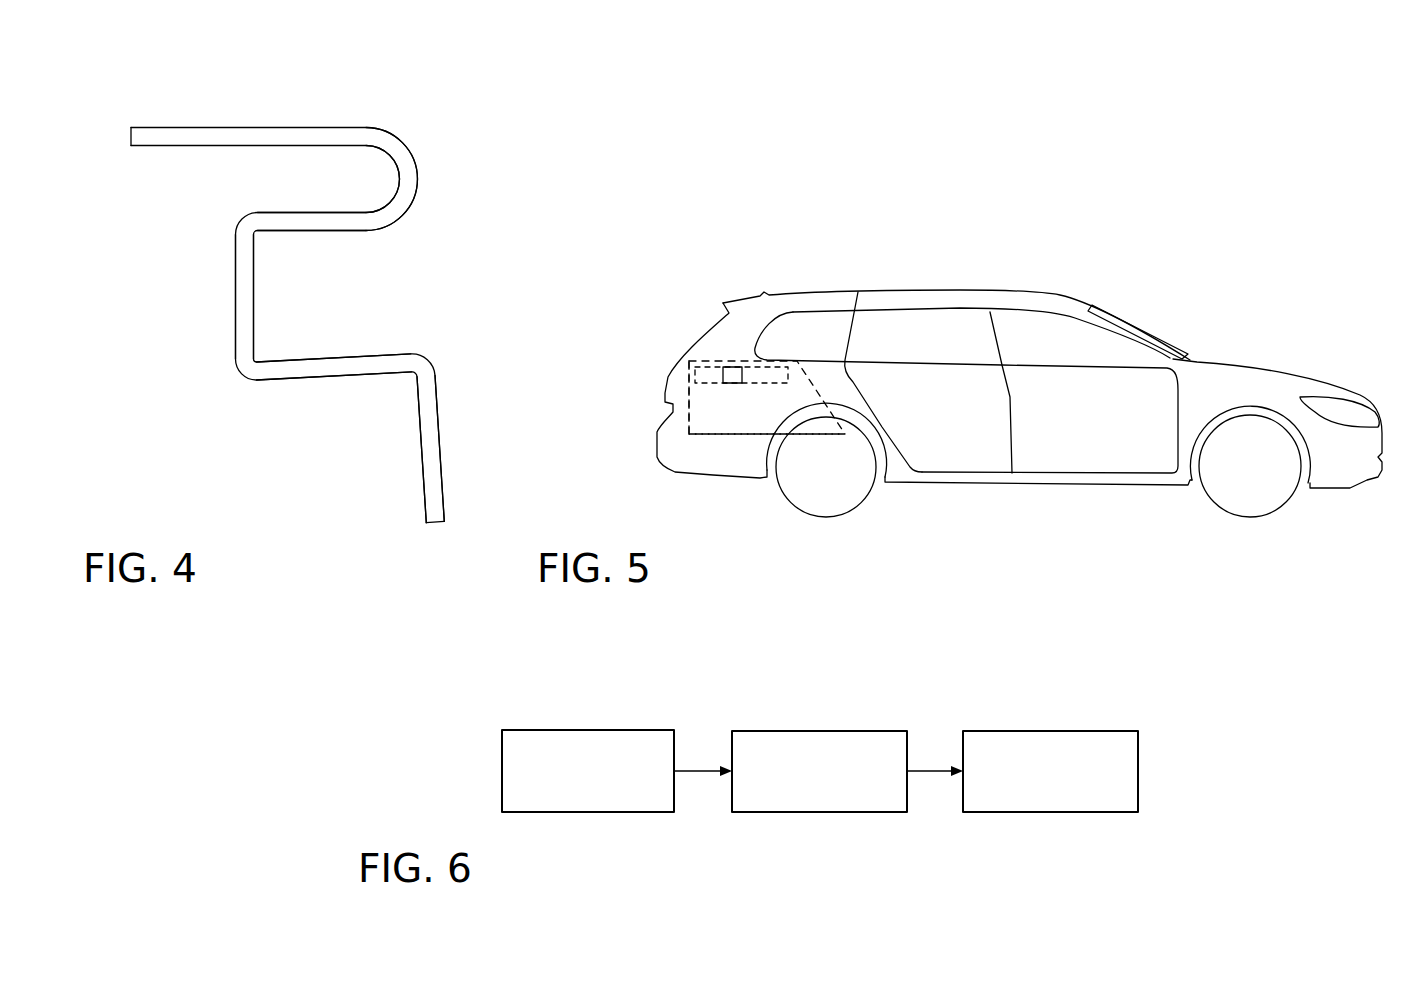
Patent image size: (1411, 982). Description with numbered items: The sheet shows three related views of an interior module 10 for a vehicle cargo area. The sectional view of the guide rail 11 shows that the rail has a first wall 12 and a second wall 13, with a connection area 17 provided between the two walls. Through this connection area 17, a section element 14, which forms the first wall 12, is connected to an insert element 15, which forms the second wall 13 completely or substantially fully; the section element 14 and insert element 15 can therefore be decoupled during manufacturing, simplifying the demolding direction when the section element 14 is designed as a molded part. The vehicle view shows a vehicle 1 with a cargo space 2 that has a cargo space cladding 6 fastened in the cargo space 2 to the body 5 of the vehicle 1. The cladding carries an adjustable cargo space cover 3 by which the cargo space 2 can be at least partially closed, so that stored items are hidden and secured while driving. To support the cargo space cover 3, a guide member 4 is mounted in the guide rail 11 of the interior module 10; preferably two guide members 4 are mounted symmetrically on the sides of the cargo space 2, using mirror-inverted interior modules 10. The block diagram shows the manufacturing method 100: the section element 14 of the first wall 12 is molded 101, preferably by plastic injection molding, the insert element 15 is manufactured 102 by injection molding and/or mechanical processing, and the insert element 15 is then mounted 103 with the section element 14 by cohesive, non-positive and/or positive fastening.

In FIG. 5, the vehicle 1 is at (1348, 351).
In FIG. 5, the cargo space 2 is at (688, 407).
In FIG. 5, the cargo space cover 3 is at (758, 375).
In FIG. 5, the guide member 4 is at (727, 375).
In FIG. 5, the body 5 is at (827, 375).
In FIG. 5, the cargo space cladding 6 is at (838, 442).
In FIG. 5, the interior module 10 is at (737, 435).
In FIG. 4, the guide rail 11 is at (408, 121).
In FIG. 5, the guide rail 11 is at (699, 384).
In FIG. 4, the first wall 12 is at (375, 354).
In FIG. 4, the second wall 13 is at (345, 232).
In FIG. 4, the section element 14 is at (437, 404).
In FIG. 4, the insert element 15 is at (416, 160).
In FIG. 4, the connection area 17 is at (246, 310).
In FIG. 6, the manufacturing method 100 is at (771, 744).
In FIG. 6, the molding 101 is at (588, 771).
In FIG. 6, the manufacturing 102 is at (819, 771).
In FIG. 6, the mounting 103 is at (1050, 771).